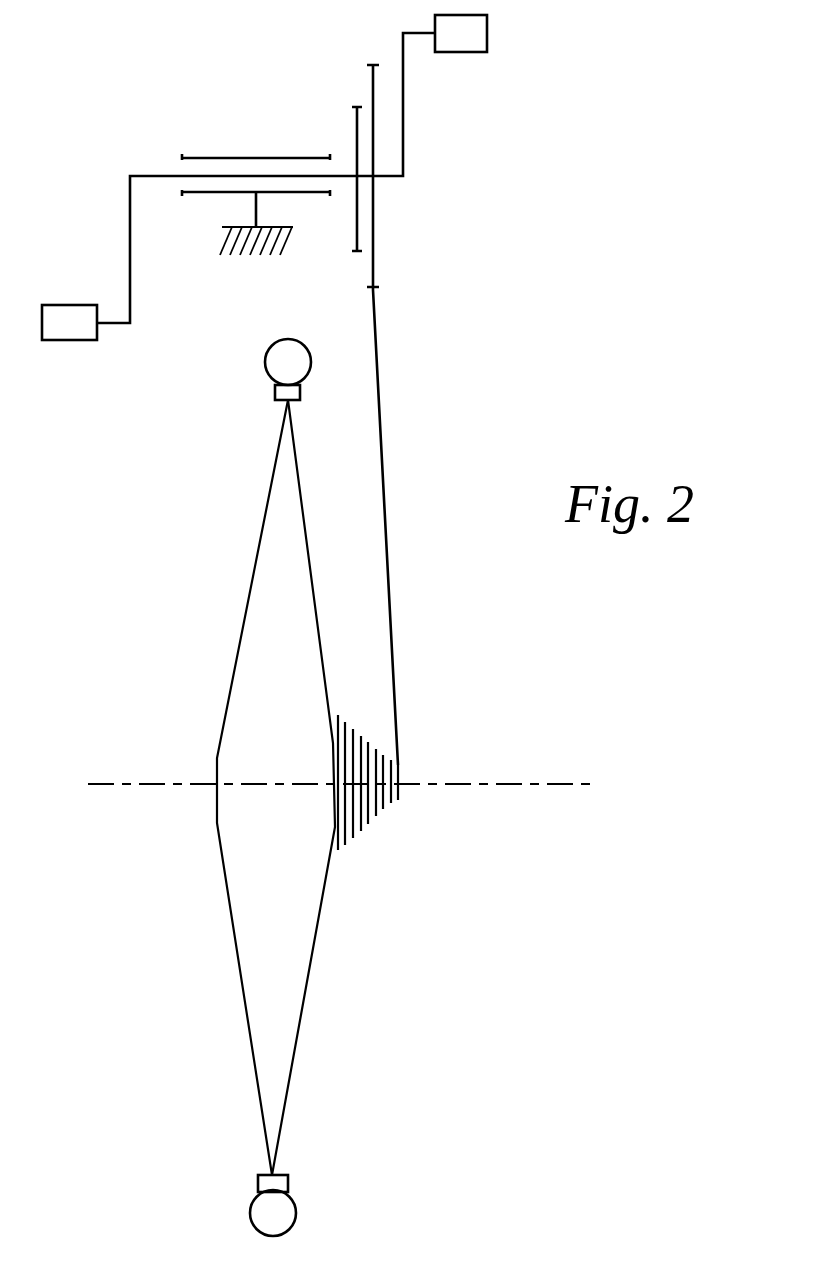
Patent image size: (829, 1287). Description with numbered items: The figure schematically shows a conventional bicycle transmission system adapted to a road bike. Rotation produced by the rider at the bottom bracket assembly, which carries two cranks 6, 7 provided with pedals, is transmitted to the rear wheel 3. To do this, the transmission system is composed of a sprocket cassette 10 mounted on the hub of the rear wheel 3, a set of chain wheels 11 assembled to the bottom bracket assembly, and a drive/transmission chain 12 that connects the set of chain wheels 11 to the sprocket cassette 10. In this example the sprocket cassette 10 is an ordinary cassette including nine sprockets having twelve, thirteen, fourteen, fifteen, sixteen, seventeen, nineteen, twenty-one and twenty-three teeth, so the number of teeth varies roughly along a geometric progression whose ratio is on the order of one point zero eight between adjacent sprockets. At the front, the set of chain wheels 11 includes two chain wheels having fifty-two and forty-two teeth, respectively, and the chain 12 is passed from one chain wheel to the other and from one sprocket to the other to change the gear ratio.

The rear wheel 3 is at (283, 1133).
The crank 6 is at (403, 122).
The crank 7 is at (126, 241).
The sprocket cassette 10 is at (375, 825).
The set of chain wheels 11 is at (376, 252).
The drive/transmission chain 12 is at (381, 528).